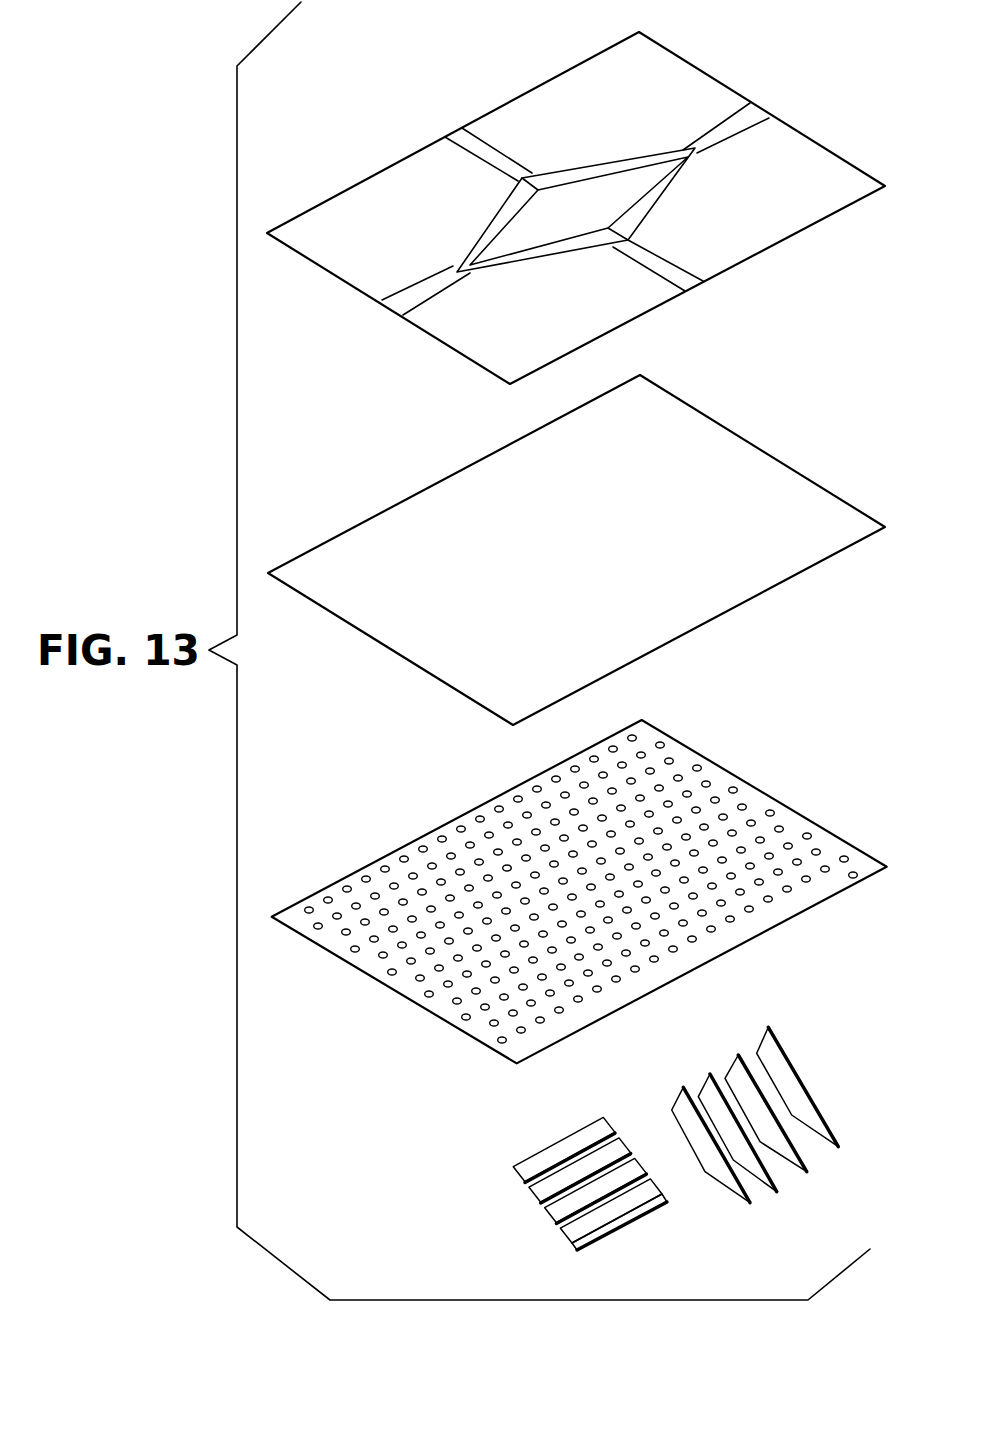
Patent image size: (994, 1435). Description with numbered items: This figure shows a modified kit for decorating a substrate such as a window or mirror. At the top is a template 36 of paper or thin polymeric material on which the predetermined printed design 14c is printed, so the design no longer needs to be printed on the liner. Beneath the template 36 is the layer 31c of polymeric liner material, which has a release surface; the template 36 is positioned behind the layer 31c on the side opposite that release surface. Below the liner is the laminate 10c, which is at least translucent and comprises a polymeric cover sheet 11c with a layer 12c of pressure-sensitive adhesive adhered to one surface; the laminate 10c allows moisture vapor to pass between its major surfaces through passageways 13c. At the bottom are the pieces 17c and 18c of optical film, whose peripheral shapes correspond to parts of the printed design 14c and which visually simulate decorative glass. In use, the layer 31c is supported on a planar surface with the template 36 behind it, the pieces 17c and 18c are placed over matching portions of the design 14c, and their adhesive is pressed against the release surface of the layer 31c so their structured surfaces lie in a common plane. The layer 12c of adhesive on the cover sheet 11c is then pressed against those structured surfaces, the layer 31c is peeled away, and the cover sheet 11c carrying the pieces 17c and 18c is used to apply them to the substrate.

The template 36 is at (712, 72).
The predetermined printed design 14c is at (593, 163).
The layer of liner material 31c is at (712, 418).
The laminate 10c is at (784, 768).
The cover sheet 11c is at (710, 742).
The layer of pressure-sensitive adhesive 12c is at (793, 827).
The passageways 13c is at (365, 876).
The piece of optical film 17c is at (556, 1208).
The piece of optical film 18c is at (754, 1203).